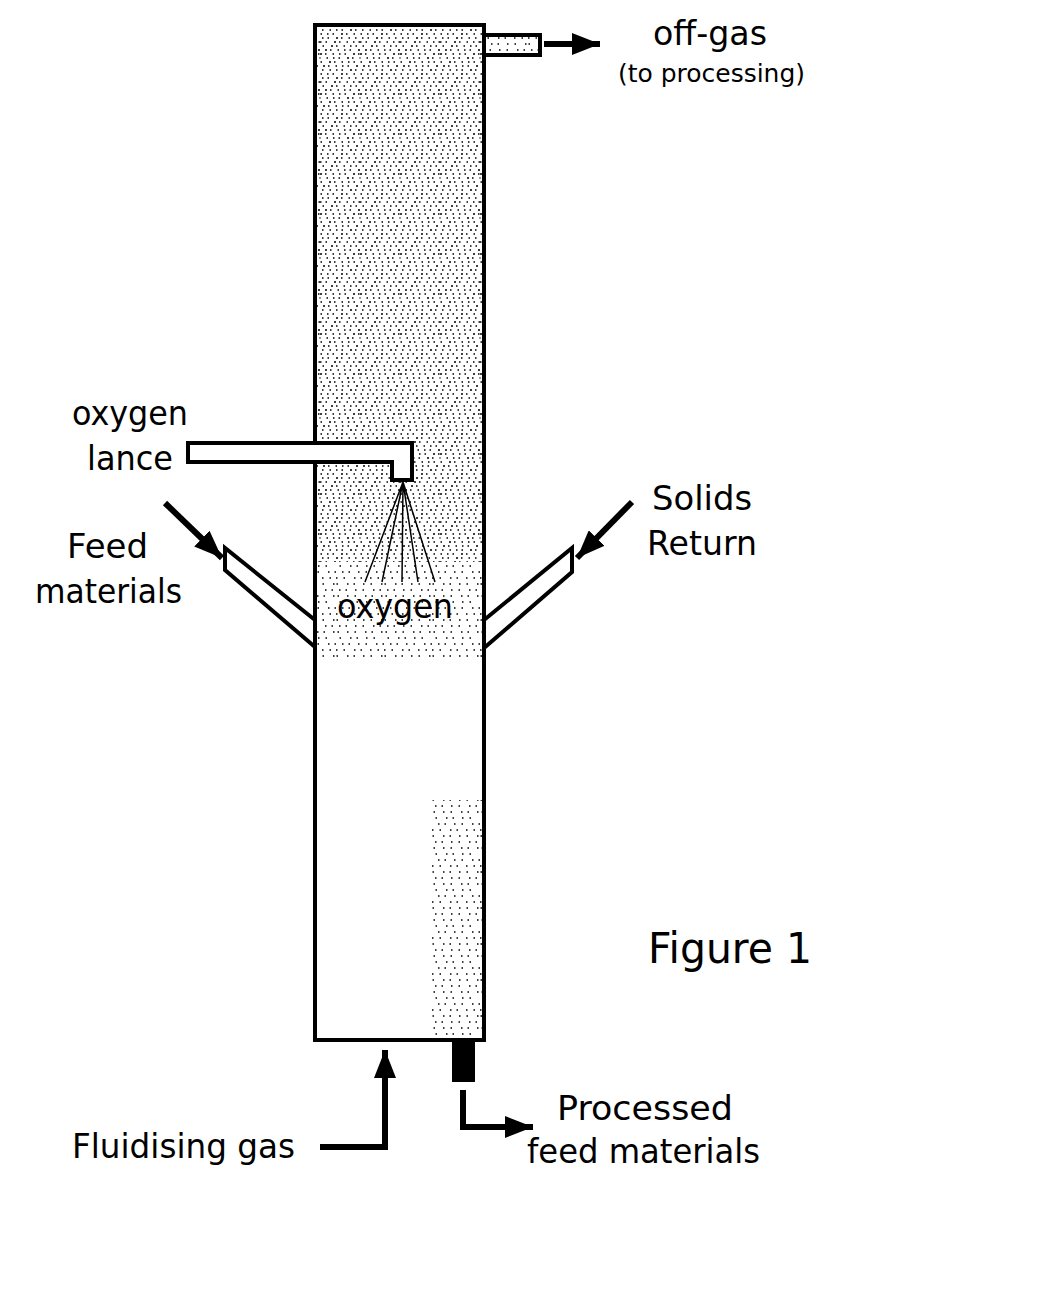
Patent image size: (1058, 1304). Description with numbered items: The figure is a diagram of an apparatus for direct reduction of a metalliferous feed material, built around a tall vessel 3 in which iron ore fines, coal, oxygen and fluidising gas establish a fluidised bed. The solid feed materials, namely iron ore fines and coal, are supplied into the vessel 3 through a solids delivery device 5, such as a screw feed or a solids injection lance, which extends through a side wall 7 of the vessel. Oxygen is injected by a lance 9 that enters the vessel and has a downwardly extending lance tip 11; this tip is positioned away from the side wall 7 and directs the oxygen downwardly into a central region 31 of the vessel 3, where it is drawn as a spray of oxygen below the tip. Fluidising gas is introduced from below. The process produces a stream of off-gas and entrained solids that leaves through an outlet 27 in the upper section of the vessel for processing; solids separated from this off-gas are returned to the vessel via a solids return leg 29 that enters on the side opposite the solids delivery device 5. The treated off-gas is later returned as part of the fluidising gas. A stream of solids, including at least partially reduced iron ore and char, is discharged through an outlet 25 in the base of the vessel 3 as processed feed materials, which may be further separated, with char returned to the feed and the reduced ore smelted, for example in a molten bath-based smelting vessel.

The vessel 3 is at (238, 103).
The solids delivery device 5 is at (272, 618).
The side wall 7 is at (487, 230).
The lance 9 is at (275, 438).
The lance tip 11 is at (413, 467).
The outlet 25 is at (478, 1070).
The outlet 27 is at (548, 65).
The solids return leg 29 is at (537, 612).
The central region 31 is at (457, 502).